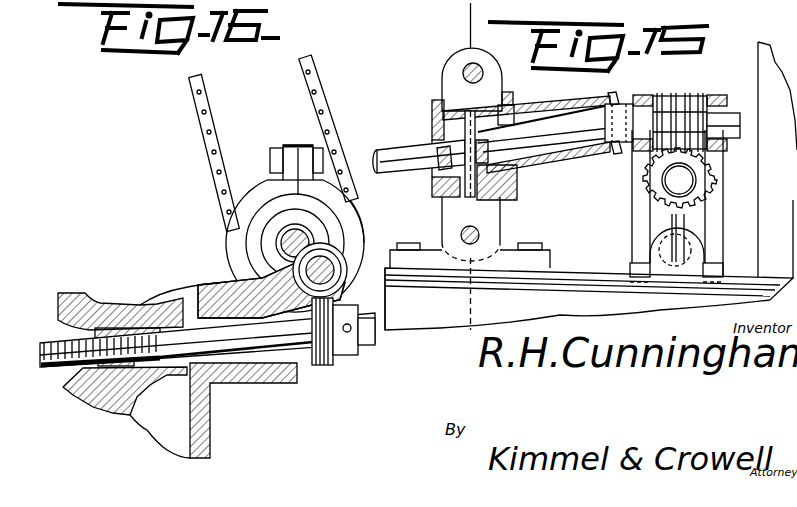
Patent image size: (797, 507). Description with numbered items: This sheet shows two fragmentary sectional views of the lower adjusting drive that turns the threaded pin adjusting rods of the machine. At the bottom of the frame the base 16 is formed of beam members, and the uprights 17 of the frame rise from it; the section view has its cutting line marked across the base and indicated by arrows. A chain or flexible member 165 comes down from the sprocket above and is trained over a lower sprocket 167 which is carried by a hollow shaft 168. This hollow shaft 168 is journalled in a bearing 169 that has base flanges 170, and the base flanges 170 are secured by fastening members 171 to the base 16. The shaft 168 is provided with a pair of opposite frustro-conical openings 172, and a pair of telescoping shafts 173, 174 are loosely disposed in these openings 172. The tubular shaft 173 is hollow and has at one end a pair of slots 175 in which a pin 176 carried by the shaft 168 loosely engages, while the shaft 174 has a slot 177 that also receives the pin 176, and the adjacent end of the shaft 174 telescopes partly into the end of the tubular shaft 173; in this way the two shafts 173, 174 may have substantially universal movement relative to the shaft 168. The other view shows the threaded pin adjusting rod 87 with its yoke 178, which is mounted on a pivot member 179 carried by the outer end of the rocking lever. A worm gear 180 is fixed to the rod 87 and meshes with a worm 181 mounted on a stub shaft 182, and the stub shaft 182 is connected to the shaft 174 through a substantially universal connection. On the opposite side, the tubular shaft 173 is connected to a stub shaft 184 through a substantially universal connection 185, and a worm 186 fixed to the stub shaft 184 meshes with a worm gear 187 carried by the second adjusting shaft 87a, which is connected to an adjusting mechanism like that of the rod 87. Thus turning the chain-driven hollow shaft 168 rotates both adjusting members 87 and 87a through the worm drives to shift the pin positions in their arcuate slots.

In FIG. 15, the base 16 is at (620, 290).
In FIG. 15, the uprights 17 is at (502, 7).
In FIG. 16, the pin adjusting rod 87 is at (257, 340).
In FIG. 15, the second adjusting shaft 87a is at (687, 177).
In FIG. 16, the chain or flexible member 165 is at (202, 138).
In FIG. 15, the lower sprocket 167 is at (522, 112).
In FIG. 16, the hollow shaft 168 is at (263, 220).
In FIG. 15, the hollow shaft 168 is at (433, 114).
In FIG. 16, the bearing 169 is at (353, 215).
In FIG. 15, the bearing 169 is at (448, 88).
In FIG. 15, the base flanges 170 is at (548, 257).
In FIG. 15, the fastening members 171 is at (530, 250).
In FIG. 15, the frustro-conical openings 172 is at (442, 132).
In FIG. 15, the tubular shaft 173 is at (567, 158).
In FIG. 15, the shaft 174 is at (428, 172).
In FIG. 15, the slots 175 is at (482, 173).
In FIG. 15, the pin 176 is at (476, 111).
In FIG. 15, the slot 177 is at (455, 131).
In FIG. 16, the yoke 178 is at (210, 288).
In FIG. 16, the pivot member 179 is at (140, 300).
In FIG. 16, the worm gear 180 is at (330, 366).
In FIG. 16, the worm 181 is at (292, 268).
In FIG. 16, the stub shaft 182 is at (346, 262).
In FIG. 15, the stub shaft 184 is at (735, 110).
In FIG. 15, the universal connection 185 is at (628, 87).
In FIG. 15, the worm 186 is at (704, 86).
In FIG. 15, the worm gear 187 is at (717, 210).